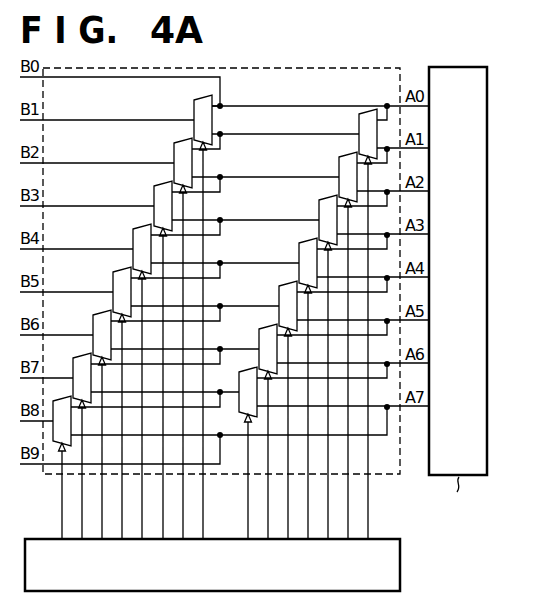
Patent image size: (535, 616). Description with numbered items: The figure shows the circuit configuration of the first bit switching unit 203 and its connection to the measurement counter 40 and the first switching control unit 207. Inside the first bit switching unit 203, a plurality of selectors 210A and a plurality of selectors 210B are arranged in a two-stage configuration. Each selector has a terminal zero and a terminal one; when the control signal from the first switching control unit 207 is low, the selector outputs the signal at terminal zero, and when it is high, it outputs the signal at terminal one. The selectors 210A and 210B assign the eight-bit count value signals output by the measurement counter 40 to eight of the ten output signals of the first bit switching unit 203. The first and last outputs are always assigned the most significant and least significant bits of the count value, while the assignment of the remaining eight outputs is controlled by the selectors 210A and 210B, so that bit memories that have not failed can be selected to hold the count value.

The first bit switching unit 203 is at (370, 67).
The selectors 210B is at (193, 104).
The selectors 210A is at (360, 125).
The measurement counter 40 is at (470, 66).
The first switching control unit 207 is at (401, 578).